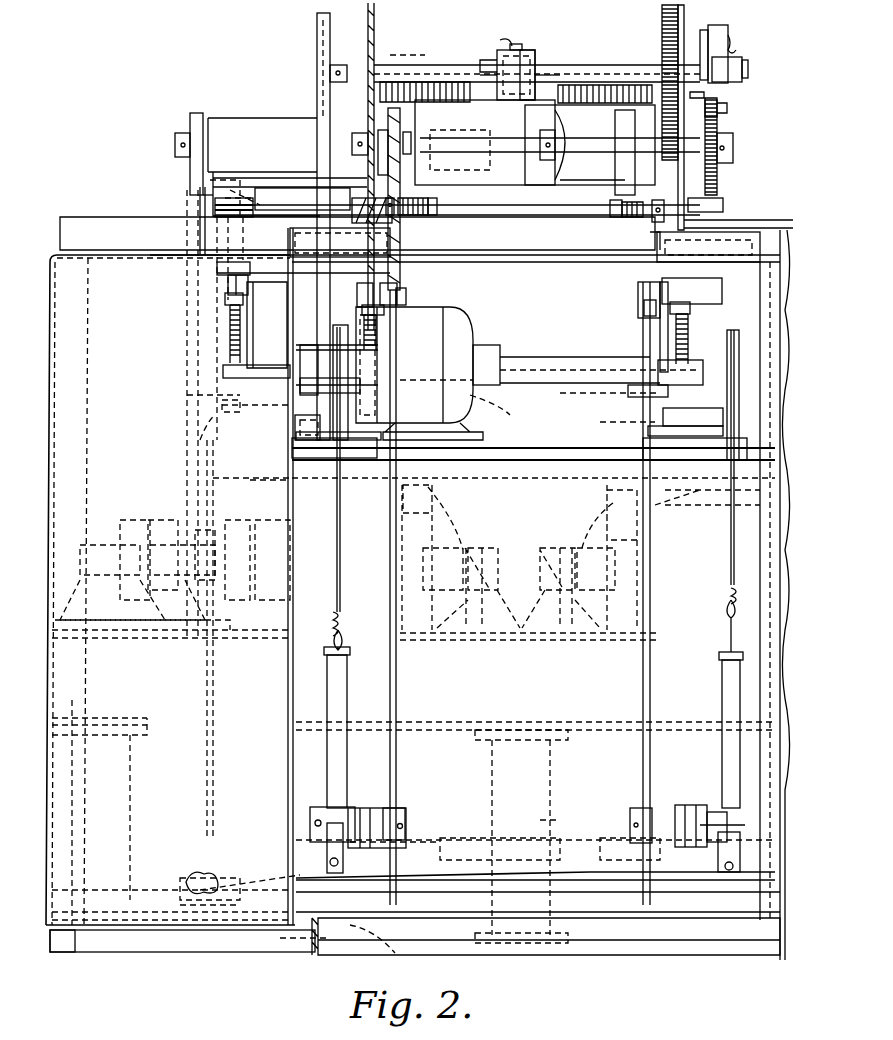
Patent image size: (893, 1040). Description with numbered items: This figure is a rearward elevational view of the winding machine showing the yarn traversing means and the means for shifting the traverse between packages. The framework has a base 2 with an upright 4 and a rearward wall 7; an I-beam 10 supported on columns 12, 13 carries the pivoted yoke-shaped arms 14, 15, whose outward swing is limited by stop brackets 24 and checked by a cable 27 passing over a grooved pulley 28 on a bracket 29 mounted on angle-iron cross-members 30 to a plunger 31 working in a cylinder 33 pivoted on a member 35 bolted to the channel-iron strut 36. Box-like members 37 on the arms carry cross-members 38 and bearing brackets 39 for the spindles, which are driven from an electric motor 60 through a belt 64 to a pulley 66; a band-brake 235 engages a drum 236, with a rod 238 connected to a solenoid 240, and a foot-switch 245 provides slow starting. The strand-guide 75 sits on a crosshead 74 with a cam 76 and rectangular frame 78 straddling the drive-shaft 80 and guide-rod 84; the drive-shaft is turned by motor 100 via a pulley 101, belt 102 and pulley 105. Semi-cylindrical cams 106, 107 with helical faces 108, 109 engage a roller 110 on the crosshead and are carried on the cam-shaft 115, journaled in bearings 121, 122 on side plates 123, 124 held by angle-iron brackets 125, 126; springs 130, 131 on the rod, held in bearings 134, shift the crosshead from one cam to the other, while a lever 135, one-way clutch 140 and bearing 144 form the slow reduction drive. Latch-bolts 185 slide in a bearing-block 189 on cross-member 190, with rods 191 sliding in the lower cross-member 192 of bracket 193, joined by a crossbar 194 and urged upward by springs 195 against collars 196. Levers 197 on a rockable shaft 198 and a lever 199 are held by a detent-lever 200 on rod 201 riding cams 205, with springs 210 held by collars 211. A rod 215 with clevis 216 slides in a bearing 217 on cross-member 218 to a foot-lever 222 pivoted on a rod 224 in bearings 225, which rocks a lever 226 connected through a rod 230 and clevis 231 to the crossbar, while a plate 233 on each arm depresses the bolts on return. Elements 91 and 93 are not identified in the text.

The base 2 is at (350, 951).
The upright 4 is at (160, 410).
The rearward wall 7 is at (100, 412).
The I-beam cross-member 10 is at (450, 738).
The cylindrical column 12 is at (550, 800).
The cylindrical column 13 is at (132, 838).
The yoke-shaped arm 14 is at (250, 430).
The yoke-shaped arm 15 is at (625, 424).
The stop bracket 24 is at (150, 530).
The cord or wire cable 27 is at (342, 505).
The grooved pulley 28 is at (350, 335).
The bracket 29 is at (353, 418).
The angle-iron cross-member 30 is at (558, 464).
The plunger 31 is at (343, 640).
The cylinder 33 is at (347, 707).
The member 35 is at (345, 875).
The channel-iron strut 36 is at (475, 865).
The hollow box-like sheet-metal member 37 is at (245, 490).
The cross-member 38 is at (281, 185).
The bearing bracket 39 is at (262, 133).
The electric motor 60 is at (270, 525).
The belt 64 is at (200, 197).
The pulley 66 is at (184, 129).
The carriage or crosshead 74 is at (528, 57).
The strand-guide 75 is at (518, 44).
The cam 76 is at (497, 65).
The two-part rectangular frame 78 is at (535, 63).
The drive-shaft 80 is at (612, 79).
The guide-rod 84 is at (555, 88).
The clamp 91 is at (497, 66).
The spring clip 93 is at (500, 47).
The motor 100 is at (458, 325).
The pulley 101 is at (296, 357).
The belt 102 is at (322, 153).
The pulley 105 is at (316, 67).
The semi-cylindrical cam 106 is at (480, 143).
The semi-cylindrical cam 107 is at (560, 170).
The helical cam-face 108 is at (454, 156).
The helical cam-face 109 is at (590, 133).
The bowl or roller 110 is at (585, 123).
The cam-shaft 115 is at (580, 155).
The bearing 121 is at (378, 165).
The bearing 122 is at (712, 190).
The vertical side plate 123 is at (375, 47).
The vertical side plate 124 is at (700, 210).
The angle-iron bracket 125 is at (350, 227).
The angle-iron bracket 126 is at (740, 227).
The spring 130 is at (425, 80).
The spring 131 is at (580, 90).
The bearing 134 is at (352, 135).
The clutch-operating lever 135 is at (742, 55).
The one-way clutch 140 is at (745, 85).
The bearing 144 is at (727, 108).
The latch-bolt 185 is at (258, 177).
The bearing-block 189 is at (216, 273).
The angle-iron cross-member 190 is at (148, 230).
The rod 191 is at (228, 397).
The lower cross-member 192 is at (242, 385).
The rectangular-shaped bracket 193 is at (250, 340).
The crossbar 194 is at (292, 423).
The helical spring 195 is at (230, 345).
The collar 196 is at (225, 300).
The lever 197 is at (228, 288).
The rockable shaft 198 is at (290, 262).
The lever 199 is at (397, 296).
The detent-lever 200 is at (388, 237).
The rod 201 is at (570, 215).
The eccentrically-shaped cam 205 is at (395, 80).
The helical spring 210 is at (425, 222).
The collar 211 is at (440, 220).
The rod 215 is at (398, 663).
The clevis 216 is at (406, 300).
The bearing 217 is at (470, 410).
The angle-iron cross-member 218 is at (570, 383).
The foot-lever 222 is at (440, 838).
The rod 224 is at (520, 830).
The bearing 225 is at (380, 813).
The lever 226 is at (272, 852).
The rod 230 is at (288, 692).
The clevis 231 is at (340, 880).
The projecting plate 233 is at (218, 207).
The band-brake 235 is at (200, 630).
The drum 236 is at (225, 528).
The rod 238 is at (212, 798).
The solenoid 240 is at (240, 930).
The foot-switch 245 is at (392, 955).